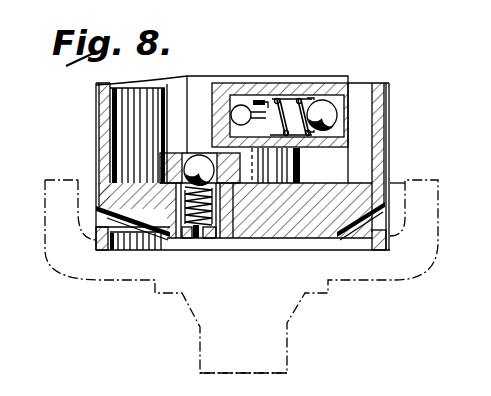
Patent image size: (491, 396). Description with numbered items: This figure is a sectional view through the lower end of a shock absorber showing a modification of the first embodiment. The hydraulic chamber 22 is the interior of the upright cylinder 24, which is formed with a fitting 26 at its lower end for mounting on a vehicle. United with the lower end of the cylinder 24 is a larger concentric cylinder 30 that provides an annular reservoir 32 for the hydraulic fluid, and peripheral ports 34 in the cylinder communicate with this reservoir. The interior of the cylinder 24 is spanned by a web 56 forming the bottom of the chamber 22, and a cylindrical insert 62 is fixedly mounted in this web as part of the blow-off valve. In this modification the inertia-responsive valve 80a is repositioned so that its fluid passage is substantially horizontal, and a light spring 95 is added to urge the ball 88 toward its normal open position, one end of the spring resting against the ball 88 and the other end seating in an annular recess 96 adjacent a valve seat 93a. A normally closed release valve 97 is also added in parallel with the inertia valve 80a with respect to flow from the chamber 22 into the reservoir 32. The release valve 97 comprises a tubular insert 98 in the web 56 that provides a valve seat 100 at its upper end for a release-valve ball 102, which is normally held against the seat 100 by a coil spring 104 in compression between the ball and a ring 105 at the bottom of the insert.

The hydraulic chamber 22 is at (363, 90).
The upright cylinder 24 is at (383, 92).
The fitting 26 is at (200, 358).
The larger concentric cylinder 30 is at (442, 178).
The annular reservoir 32 is at (398, 182).
The peripheral ports 34 is at (100, 212).
The web 56 is at (267, 238).
The cylindrical insert 62 is at (196, 82).
The inertia-responsive valve 80a is at (333, 84).
The ball 88 is at (345, 117).
The valve seat 93a is at (277, 100).
The light spring 95 is at (303, 147).
The annular recess 96 is at (266, 100).
The release valve 97 is at (168, 152).
The tubular insert 98 is at (173, 240).
The valve seat 100 is at (197, 158).
The release-valve ball 102 is at (185, 168).
The coil spring 104 is at (190, 240).
The ring 105 is at (217, 240).